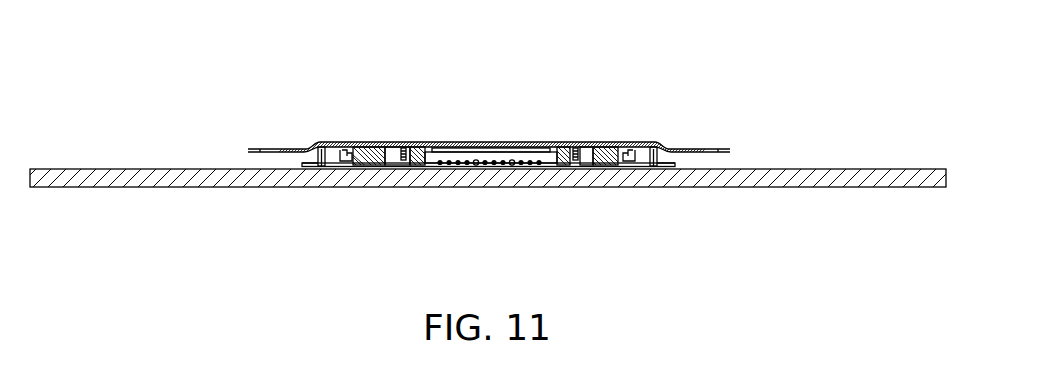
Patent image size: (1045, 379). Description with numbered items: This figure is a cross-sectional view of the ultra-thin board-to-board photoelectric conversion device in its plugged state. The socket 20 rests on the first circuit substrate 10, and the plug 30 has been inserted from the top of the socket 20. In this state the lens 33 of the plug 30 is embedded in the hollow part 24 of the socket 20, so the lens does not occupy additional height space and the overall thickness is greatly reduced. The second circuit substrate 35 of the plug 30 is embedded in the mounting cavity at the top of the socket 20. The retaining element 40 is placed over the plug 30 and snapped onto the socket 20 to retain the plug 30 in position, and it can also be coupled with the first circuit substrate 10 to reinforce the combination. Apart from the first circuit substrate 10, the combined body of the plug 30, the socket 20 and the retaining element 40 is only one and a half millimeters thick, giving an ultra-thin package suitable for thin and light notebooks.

The first circuit substrate 10 is at (492, 140).
The socket 20 is at (506, 111).
The hollow part 24 is at (517, 115).
The plug 30 is at (520, 52).
The lens 33 is at (492, 113).
The second circuit substrate 35 is at (517, 102).
The retaining element 40 is at (489, 106).